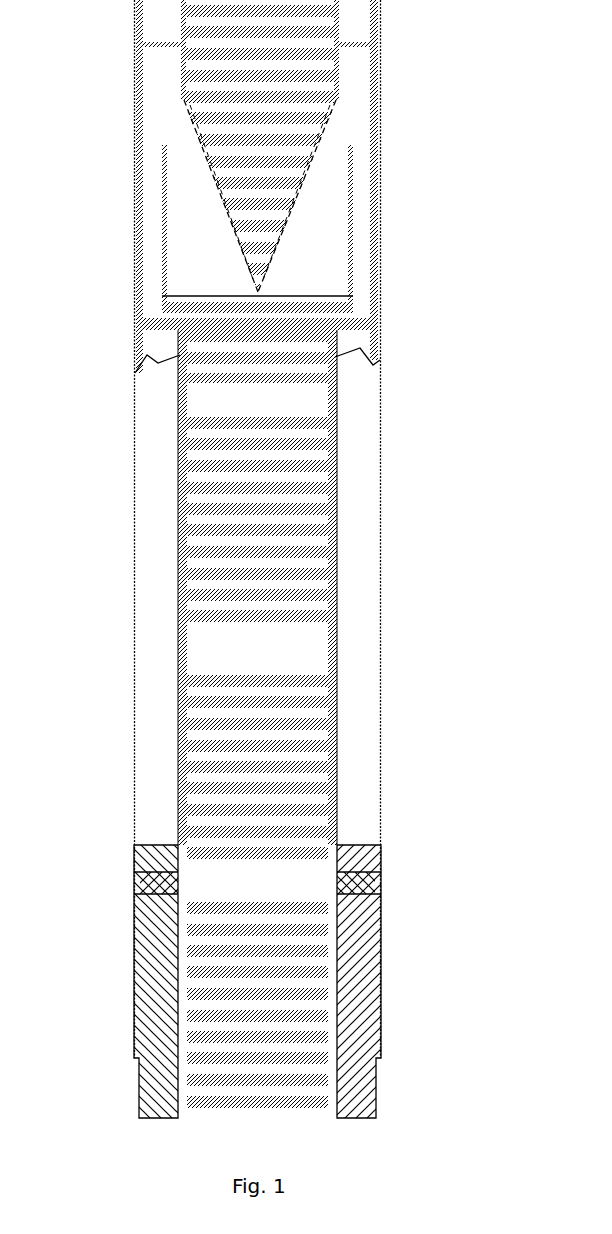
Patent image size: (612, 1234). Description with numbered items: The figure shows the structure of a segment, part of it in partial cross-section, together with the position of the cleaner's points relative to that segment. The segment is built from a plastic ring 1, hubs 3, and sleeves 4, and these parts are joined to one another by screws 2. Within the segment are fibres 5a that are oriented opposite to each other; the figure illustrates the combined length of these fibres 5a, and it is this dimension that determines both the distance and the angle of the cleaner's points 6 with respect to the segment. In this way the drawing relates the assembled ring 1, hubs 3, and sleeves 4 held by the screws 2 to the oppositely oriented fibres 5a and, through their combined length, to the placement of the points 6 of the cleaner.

The plastic ring 1 is at (152, 452).
The screws 2 is at (135, 888).
The hubs 3 is at (183, 638).
The sleeves 4 is at (310, 670).
The fibres 5a is at (187, 525).
The cleaner's points 6 is at (307, 170).